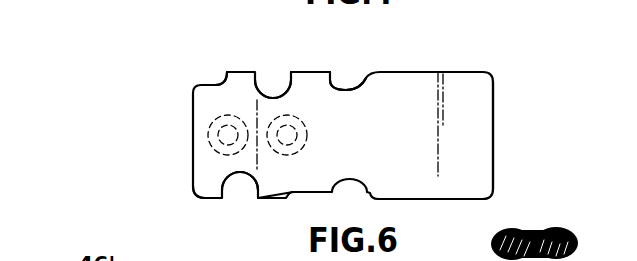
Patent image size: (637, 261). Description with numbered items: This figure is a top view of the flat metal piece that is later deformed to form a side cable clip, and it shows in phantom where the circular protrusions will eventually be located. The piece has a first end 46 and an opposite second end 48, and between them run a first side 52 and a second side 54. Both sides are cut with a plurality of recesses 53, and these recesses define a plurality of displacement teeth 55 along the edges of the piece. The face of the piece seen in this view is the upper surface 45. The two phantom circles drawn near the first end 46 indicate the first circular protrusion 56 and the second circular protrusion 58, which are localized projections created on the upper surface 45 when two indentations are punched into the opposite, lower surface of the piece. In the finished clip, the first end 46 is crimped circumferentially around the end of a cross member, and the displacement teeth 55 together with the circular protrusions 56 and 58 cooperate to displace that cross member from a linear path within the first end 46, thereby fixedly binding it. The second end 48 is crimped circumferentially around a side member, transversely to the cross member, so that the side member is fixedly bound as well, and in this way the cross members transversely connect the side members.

The upper surface 45 is at (393, 148).
The first end 46 is at (203, 163).
The second end 48 is at (483, 124).
The first side 52 is at (316, 78).
The recesses 53 is at (275, 97).
The second side 54 is at (271, 198).
The displacement teeth 55 is at (245, 70).
The first circular protrusion 56 is at (206, 126).
The second circular protrusion 58 is at (307, 130).